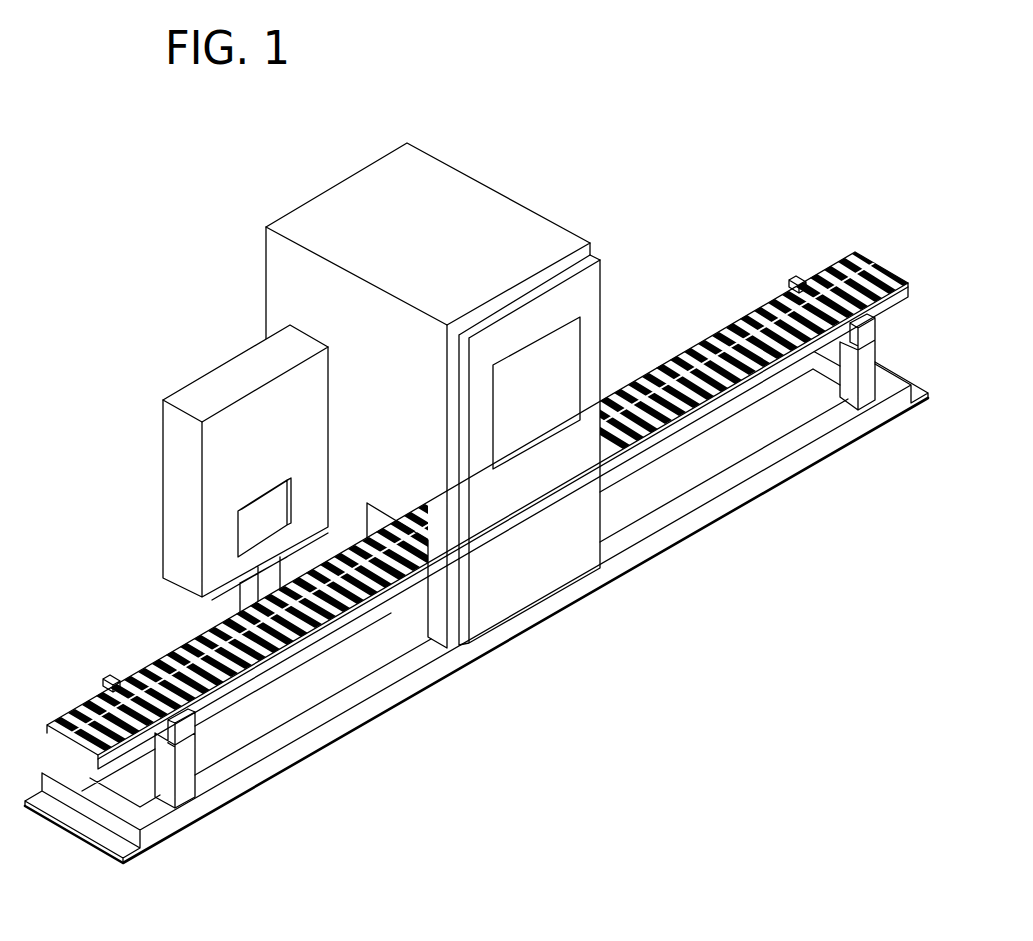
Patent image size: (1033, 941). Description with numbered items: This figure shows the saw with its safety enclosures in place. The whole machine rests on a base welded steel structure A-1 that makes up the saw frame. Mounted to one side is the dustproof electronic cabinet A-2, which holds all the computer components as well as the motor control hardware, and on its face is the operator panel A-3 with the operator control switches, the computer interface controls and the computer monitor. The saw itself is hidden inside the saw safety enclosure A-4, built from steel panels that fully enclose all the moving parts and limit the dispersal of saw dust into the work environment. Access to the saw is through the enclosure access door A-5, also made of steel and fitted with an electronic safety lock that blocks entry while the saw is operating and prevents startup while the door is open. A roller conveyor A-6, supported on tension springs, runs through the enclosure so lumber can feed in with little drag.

The base welded steel structure A-1 is at (442, 662).
The dustproof electronic cabinet A-2 is at (228, 382).
The operator panel A-3 is at (262, 523).
The saw safety enclosure A-4 is at (447, 207).
The enclosure access door A-5 is at (562, 547).
The roller conveyor A-6 is at (88, 702).